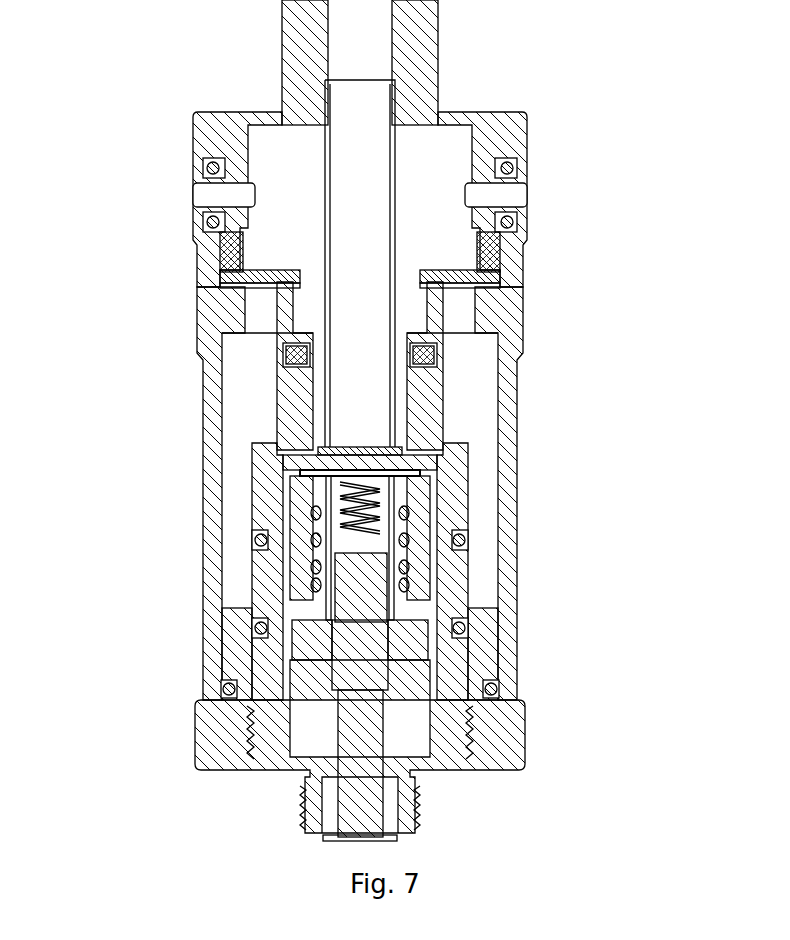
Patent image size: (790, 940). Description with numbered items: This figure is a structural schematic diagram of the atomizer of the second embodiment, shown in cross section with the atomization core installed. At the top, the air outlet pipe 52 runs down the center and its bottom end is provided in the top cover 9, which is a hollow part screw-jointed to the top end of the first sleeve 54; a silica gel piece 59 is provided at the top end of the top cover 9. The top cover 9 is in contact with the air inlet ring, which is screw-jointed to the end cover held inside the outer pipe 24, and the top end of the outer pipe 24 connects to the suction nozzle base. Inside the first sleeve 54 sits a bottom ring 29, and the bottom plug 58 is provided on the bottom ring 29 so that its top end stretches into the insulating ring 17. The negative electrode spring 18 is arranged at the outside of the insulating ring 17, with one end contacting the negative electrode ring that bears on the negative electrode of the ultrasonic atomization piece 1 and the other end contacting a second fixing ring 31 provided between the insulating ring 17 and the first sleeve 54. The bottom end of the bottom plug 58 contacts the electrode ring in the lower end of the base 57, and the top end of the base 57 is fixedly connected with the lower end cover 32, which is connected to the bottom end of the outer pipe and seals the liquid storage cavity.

The ultrasonic atomization piece 1 is at (252, 452).
The top cover 9 is at (427, 407).
The insulating ring 17 is at (405, 575).
The negative electrode spring 18 is at (398, 555).
The outer pipe 24 is at (520, 295).
The bottom ring 29 is at (227, 665).
The second fixing ring 31 is at (242, 568).
The lower end cover 32 is at (215, 677).
The air outlet pipe 52 is at (327, 163).
The first sleeve 54 is at (457, 510).
The base 57 is at (492, 744).
The bottom plug 58 is at (362, 672).
The silica gel piece 59 is at (432, 358).